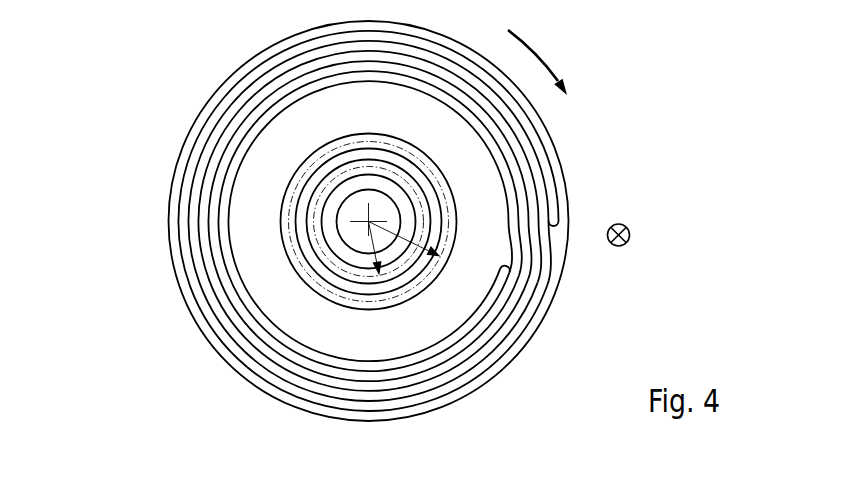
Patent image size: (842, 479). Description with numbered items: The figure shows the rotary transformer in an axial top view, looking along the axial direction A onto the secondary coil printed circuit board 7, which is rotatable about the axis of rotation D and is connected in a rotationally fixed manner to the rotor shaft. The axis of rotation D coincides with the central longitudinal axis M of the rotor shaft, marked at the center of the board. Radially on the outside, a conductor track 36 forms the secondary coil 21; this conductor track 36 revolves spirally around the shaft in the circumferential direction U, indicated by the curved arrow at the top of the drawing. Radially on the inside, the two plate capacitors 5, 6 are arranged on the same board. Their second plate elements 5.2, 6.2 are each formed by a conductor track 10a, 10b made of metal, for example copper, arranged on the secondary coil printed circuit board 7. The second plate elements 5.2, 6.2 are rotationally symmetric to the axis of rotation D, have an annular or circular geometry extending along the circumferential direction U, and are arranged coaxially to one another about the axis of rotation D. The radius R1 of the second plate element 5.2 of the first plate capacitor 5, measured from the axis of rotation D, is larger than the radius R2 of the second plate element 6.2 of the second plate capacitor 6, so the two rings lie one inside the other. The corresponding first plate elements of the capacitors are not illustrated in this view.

The secondary coil printed circuit board 7 is at (156, 173).
The secondary coil 21 is at (499, 157).
The conductor track 36 is at (411, 221).
The first plate capacitor 5 is at (308, 285).
The second plate element of the first plate capacitor 5.2 is at (273, 261).
The conductor track 10a is at (369, 222).
The second plate capacitor 6 is at (320, 243).
The second plate element of the second plate capacitor 6.2 is at (246, 249).
The conductor track 10b is at (369, 222).
The axis of rotation D is at (348, 203).
The central longitudinal axis M is at (369, 222).
The radius of the second plate element of the first plate capacitor R1 is at (415, 228).
The radius of the second plate element of the second plate capacitor R2 is at (377, 271).
The circumferential direction U is at (537, 52).
The axial direction A is at (630, 235).